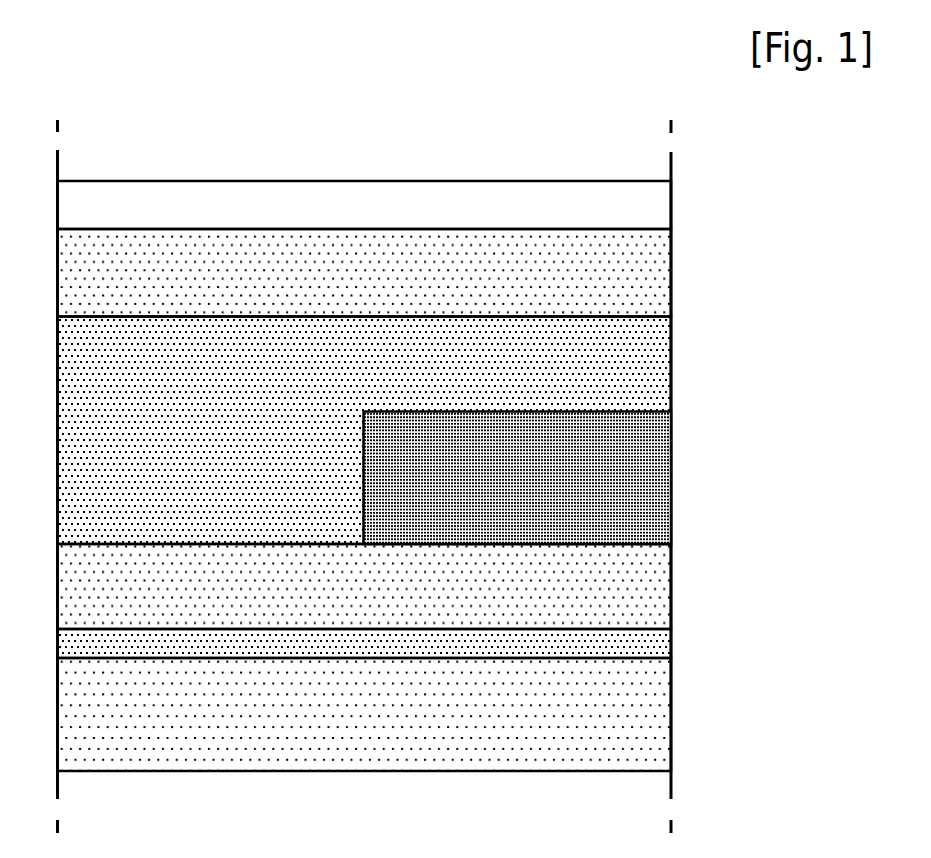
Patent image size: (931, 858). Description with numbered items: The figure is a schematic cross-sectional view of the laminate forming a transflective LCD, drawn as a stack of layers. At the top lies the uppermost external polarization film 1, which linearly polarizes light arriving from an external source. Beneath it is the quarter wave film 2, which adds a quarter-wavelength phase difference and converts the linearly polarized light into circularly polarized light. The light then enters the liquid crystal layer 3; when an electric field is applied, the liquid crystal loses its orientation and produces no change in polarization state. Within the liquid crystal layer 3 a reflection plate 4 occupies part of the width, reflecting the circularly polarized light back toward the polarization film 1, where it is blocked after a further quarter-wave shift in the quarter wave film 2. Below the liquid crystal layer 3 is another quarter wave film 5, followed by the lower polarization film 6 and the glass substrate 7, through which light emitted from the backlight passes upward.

The polarization film 1 is at (662, 205).
The quarter wave film 2 is at (657, 280).
The liquid crystal layer 3 is at (660, 361).
The reflection plate 4 is at (665, 466).
The quarter wave film 5 is at (660, 579).
The lower polarization film 6 is at (662, 642).
The glass substrate 7 is at (657, 715).